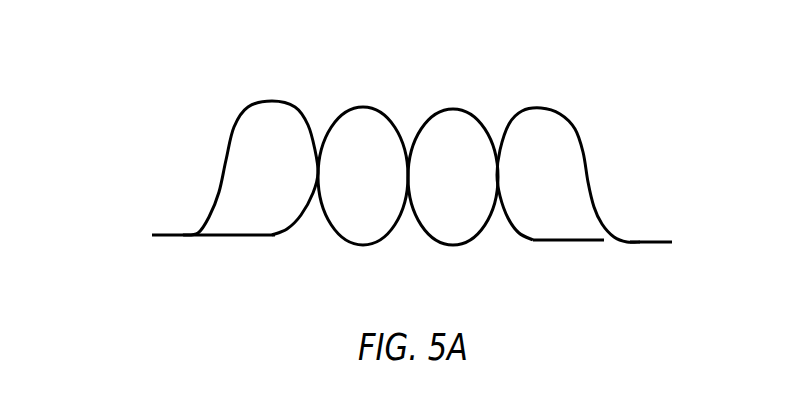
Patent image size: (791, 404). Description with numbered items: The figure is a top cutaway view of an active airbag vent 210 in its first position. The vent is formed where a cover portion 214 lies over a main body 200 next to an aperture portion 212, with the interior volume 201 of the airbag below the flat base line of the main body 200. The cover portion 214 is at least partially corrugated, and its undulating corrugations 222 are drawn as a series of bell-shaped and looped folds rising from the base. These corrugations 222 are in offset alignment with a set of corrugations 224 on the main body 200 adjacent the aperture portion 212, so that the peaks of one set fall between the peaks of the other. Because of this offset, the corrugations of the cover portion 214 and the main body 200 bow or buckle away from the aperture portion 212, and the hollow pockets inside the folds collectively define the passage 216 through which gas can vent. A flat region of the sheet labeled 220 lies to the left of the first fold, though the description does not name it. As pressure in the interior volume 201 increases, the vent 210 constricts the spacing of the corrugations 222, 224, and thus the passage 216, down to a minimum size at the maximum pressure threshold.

The main body 200 is at (157, 232).
The interior volume 201 is at (178, 282).
The active vent 210 is at (490, 55).
The aperture portion 212 is at (252, 236).
The cover portion 214 is at (227, 158).
The passage 216 is at (277, 181).
The flat land region 220 is at (182, 195).
The corrugations 222 is at (371, 167).
The corrugations 224 is at (363, 107).